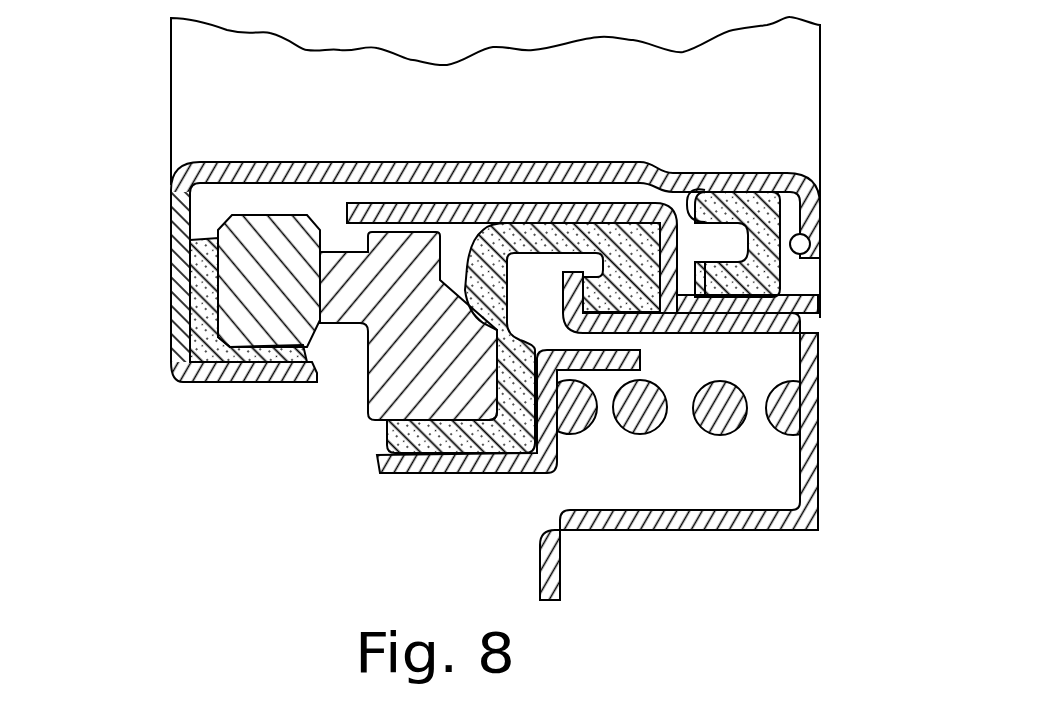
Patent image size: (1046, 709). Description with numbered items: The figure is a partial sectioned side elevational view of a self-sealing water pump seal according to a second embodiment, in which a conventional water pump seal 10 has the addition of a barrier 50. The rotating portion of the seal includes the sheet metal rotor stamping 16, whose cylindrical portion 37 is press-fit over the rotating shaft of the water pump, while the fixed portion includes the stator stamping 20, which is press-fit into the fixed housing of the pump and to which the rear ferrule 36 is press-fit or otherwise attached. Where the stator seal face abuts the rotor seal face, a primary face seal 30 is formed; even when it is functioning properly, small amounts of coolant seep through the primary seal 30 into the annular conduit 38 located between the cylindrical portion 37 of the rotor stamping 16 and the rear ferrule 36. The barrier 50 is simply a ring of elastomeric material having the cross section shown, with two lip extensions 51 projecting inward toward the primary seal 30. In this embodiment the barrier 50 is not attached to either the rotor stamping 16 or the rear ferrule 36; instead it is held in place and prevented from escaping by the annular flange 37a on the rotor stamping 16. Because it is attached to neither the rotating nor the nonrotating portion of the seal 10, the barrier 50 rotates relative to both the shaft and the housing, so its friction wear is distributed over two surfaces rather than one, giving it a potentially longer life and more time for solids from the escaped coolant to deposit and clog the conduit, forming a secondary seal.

The water pump seal 10 is at (181, 376).
The rotor stamping 16 is at (237, 383).
The stator stamping 20 is at (700, 531).
The primary face seal 30 is at (323, 250).
The rear ferrule 36 is at (805, 292).
The cylindrical portion 37 is at (388, 163).
The annular flange 37a is at (817, 258).
The annular conduit 38 is at (505, 183).
The barrier 50 is at (780, 266).
The lip extensions 51 is at (692, 188).